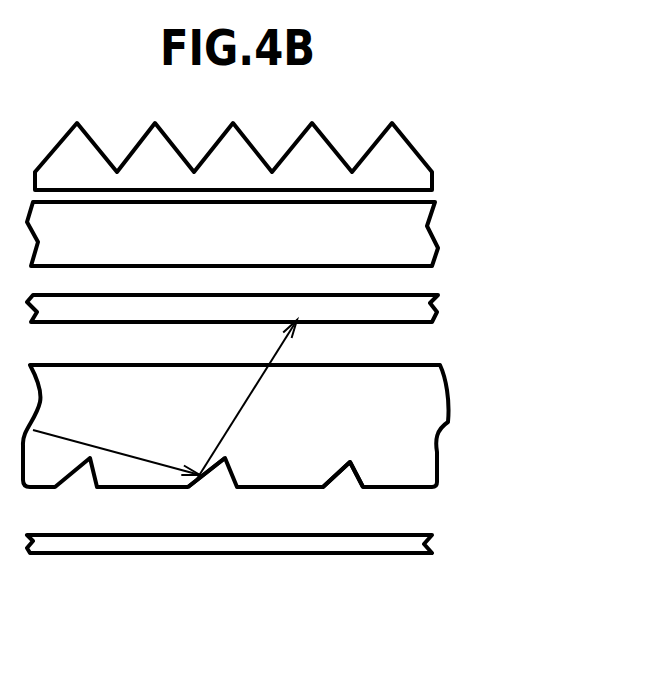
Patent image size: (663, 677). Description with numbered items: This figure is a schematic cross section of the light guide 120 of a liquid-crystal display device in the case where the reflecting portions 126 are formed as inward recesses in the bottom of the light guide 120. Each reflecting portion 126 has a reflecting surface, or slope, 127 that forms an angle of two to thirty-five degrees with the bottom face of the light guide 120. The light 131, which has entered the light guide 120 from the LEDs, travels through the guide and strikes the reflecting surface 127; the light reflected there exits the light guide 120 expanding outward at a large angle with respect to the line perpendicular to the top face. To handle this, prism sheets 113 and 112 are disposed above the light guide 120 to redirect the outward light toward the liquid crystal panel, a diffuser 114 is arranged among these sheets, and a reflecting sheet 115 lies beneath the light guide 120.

The prism sheet 112 is at (433, 175).
The prism sheet 113 is at (435, 247).
The diffuser 114 is at (438, 315).
The light guide 120 is at (425, 423).
The reflecting portions 126 is at (335, 490).
The reflecting surface 127 is at (195, 485).
The light 131 is at (130, 462).
The reflecting sheet 115 is at (432, 548).